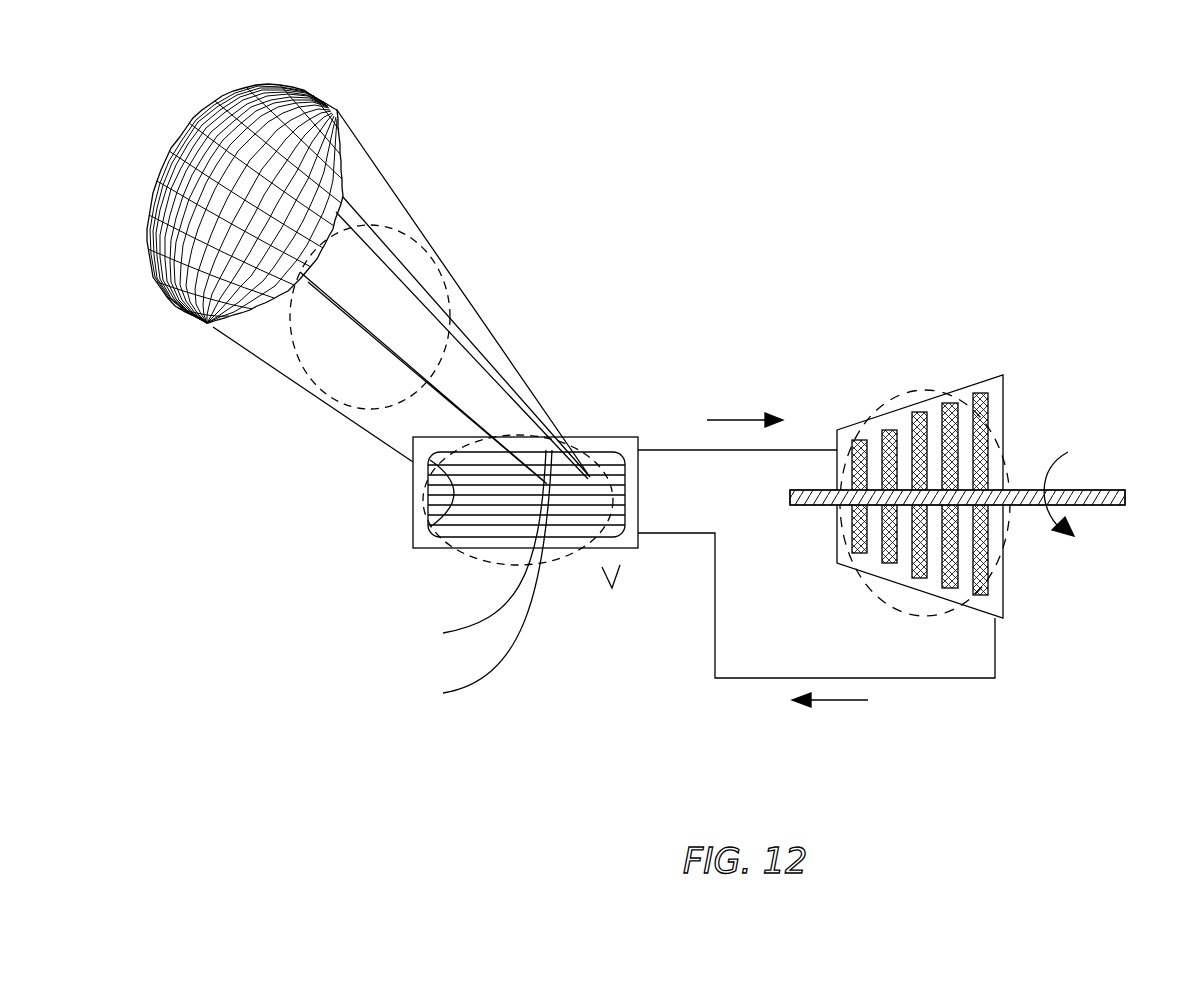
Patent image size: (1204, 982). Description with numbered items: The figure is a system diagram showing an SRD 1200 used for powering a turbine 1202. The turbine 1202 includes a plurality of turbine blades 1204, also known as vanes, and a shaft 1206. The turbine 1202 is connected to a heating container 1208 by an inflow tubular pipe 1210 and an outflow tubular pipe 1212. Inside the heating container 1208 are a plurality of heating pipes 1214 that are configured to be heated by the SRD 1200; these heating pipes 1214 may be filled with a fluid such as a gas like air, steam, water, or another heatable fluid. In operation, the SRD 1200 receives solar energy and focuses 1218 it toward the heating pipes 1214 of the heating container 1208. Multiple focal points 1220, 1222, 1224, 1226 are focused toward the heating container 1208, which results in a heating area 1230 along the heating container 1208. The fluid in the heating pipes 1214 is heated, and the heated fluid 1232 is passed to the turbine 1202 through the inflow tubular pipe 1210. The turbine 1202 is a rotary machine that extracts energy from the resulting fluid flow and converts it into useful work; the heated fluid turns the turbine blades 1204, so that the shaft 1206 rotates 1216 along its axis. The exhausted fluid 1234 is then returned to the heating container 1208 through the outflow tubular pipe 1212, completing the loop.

The SRD 1200 is at (277, 100).
The turbine 1202 is at (993, 375).
The turbine blades 1204 is at (911, 390).
The shaft 1206 is at (1108, 505).
The heating container 1208 is at (410, 505).
The inflow tubular pipe 1210 is at (683, 450).
The outflow tubular pipe 1212 is at (715, 623).
The heating pipes 1214 is at (617, 432).
The rotation of the shaft 1216 is at (1077, 489).
The focusing of solar energy 1218 is at (457, 230).
The focal point 1220 is at (590, 477).
The focal point 1222 is at (428, 503).
The focal point 1224 is at (469, 549).
The second curve 1226 is at (472, 576).
The heating area 1230 is at (560, 560).
The heated fluid 1232 is at (731, 415).
The flow direction return 1234 is at (840, 703).